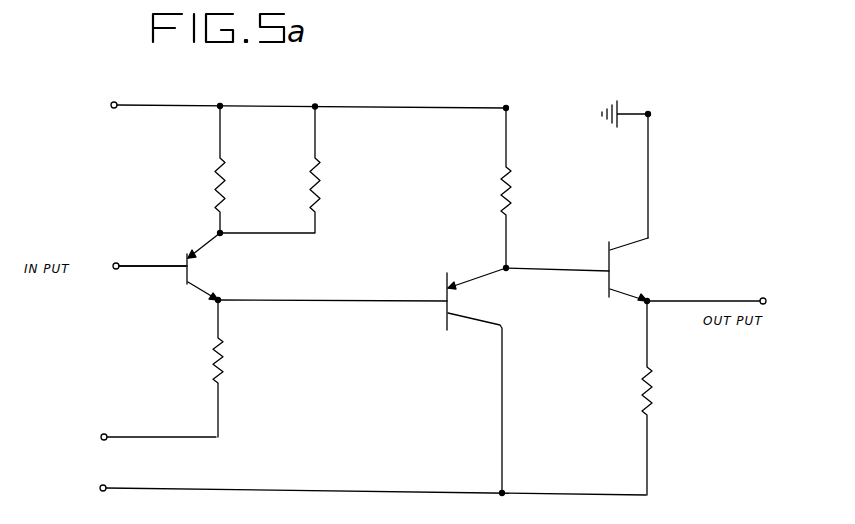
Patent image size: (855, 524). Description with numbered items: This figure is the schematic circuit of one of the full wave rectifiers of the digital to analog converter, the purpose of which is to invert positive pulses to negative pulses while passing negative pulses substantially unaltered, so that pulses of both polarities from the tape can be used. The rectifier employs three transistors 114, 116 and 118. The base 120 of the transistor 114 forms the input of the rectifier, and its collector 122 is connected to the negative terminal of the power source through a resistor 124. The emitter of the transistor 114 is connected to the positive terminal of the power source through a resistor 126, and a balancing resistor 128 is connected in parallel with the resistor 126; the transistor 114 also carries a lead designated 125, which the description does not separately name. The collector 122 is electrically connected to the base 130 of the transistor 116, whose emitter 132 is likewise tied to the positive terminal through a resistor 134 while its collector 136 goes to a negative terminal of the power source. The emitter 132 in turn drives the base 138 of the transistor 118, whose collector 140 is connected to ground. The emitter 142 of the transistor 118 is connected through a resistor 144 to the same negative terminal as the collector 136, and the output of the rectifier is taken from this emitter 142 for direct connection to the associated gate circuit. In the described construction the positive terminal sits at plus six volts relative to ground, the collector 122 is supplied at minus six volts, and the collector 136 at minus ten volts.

The transistor 114 is at (185, 263).
The transistor 116 is at (445, 294).
The transistor 118 is at (606, 257).
The base 120 is at (178, 278).
The collector 122 is at (204, 292).
The resistor 124 is at (214, 360).
The collector of first transistor 125 is at (200, 255).
The resistor 126 is at (218, 174).
The balancing resistor 128 is at (318, 180).
The base 130 is at (443, 318).
The emitter 132 is at (470, 278).
The resistor 134 is at (508, 180).
The collector 136 is at (485, 324).
The base 138 is at (607, 283).
The collector 140 is at (625, 248).
The emitter 142 is at (633, 298).
The resistor 144 is at (650, 397).